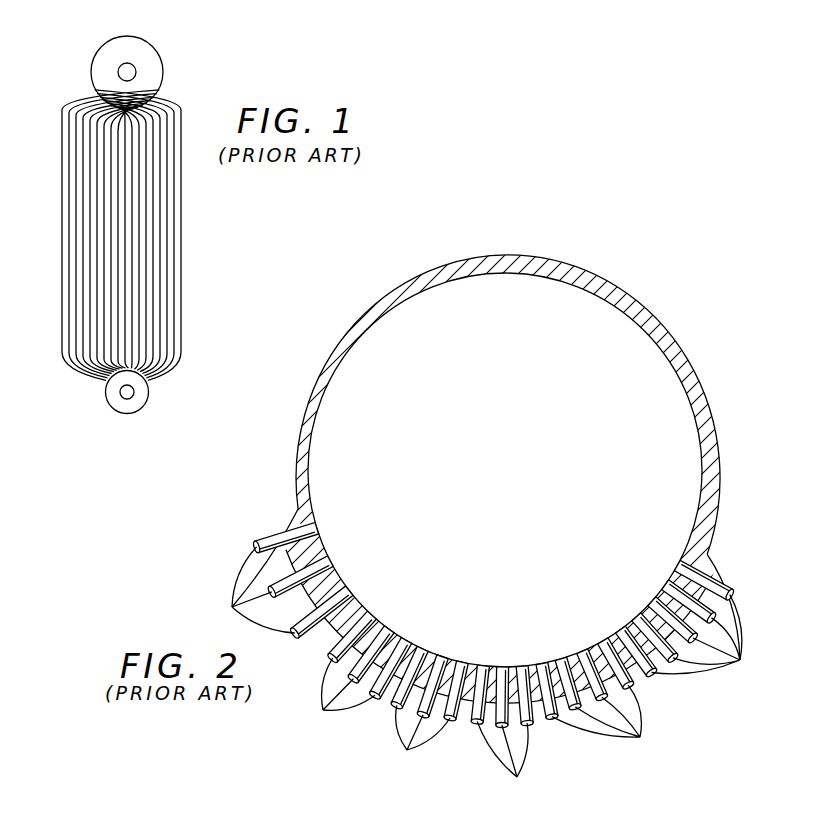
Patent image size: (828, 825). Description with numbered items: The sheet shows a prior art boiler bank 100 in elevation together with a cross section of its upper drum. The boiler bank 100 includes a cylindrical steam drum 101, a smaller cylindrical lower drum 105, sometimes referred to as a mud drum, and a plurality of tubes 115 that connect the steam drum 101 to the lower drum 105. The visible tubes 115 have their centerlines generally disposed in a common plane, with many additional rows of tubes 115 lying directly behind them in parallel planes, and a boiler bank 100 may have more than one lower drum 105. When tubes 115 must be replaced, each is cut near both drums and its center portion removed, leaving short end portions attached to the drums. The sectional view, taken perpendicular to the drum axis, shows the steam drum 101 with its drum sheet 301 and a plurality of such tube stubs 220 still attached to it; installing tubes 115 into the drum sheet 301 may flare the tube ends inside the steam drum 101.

In FIG. 1, the boiler bank 100 is at (214, 233).
In FIG. 1, the steam drum 101 is at (163, 60).
In FIG. 2, the steam drum 101 is at (684, 312).
In FIG. 1, the lower drum 105 is at (148, 398).
In FIG. 1, the tubes 115 is at (66, 336).
In FIG. 2, the tube stubs 220 is at (473, 666).
In FIG. 2, the drum sheet 301 is at (722, 537).